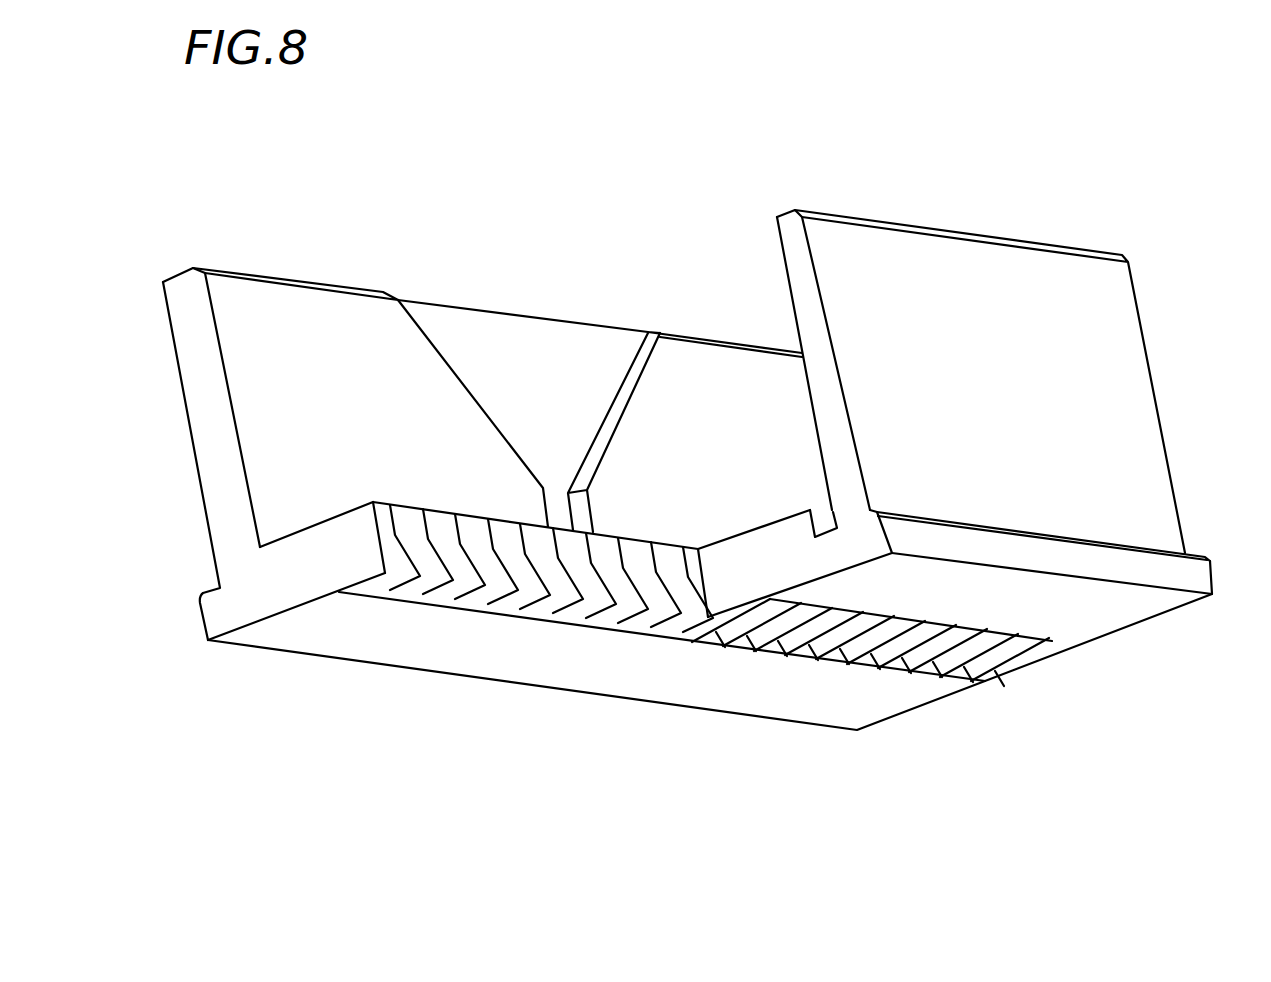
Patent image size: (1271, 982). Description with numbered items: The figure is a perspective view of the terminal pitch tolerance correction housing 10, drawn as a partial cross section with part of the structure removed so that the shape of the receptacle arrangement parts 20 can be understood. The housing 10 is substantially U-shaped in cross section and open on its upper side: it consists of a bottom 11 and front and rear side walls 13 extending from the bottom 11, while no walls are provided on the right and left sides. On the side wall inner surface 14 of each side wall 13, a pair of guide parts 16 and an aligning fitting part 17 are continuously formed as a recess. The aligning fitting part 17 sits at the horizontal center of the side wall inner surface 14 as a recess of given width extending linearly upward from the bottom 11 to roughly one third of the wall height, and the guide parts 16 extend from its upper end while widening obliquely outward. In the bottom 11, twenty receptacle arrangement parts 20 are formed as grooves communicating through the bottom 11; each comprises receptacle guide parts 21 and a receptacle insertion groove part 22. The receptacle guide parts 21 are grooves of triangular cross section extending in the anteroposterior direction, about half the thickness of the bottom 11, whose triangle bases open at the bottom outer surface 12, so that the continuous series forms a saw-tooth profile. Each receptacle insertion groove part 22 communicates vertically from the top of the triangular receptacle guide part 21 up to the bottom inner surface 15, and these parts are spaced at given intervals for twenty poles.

The terminal pitch tolerance correction housing 10 is at (165, 220).
The bottom 11 is at (288, 590).
The bottom outer surface 12 is at (313, 643).
The side wall 13 is at (195, 365).
The side wall inner surface 14 is at (293, 336).
The bottom inner surface 15 is at (315, 517).
The guide part 16 is at (463, 388).
The aligning fitting part 17 is at (547, 511).
The receptacle arrangement part 20 is at (440, 780).
The receptacle guide part 21 is at (405, 570).
The receptacle insertion groove part 22 is at (383, 527).